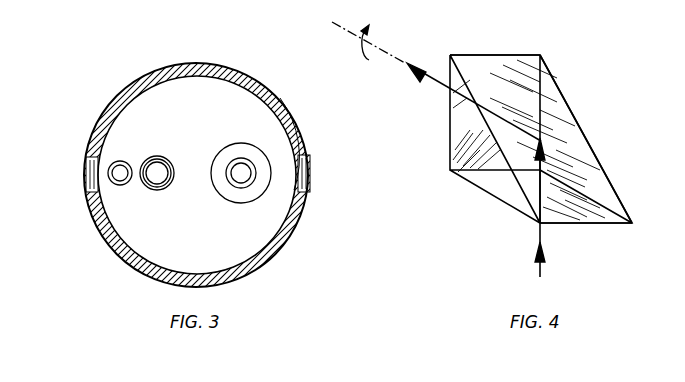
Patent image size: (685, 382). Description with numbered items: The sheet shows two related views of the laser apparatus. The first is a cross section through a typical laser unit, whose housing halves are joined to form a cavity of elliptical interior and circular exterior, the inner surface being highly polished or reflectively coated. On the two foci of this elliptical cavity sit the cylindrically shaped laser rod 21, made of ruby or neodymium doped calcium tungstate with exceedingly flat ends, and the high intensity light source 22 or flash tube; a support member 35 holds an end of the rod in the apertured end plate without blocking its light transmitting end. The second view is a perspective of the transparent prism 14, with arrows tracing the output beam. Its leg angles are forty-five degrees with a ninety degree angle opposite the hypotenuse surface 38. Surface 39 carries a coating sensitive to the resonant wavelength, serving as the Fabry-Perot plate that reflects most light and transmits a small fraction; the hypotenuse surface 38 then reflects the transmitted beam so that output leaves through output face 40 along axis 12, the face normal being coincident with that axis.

In FIG. 4, the axis 12 is at (340, 29).
In FIG. 4, the prism 14 is at (632, 223).
In FIG. 3, the laser rod 21 is at (243, 173).
In FIG. 3, the high intensity light source 22 is at (155, 173).
In FIG. 3, the support member 35 is at (262, 163).
In FIG. 4, the hypotenuse surface 38 is at (567, 122).
In FIG. 4, the surface 39 is at (588, 224).
In FIG. 4, the output face 40 is at (488, 73).